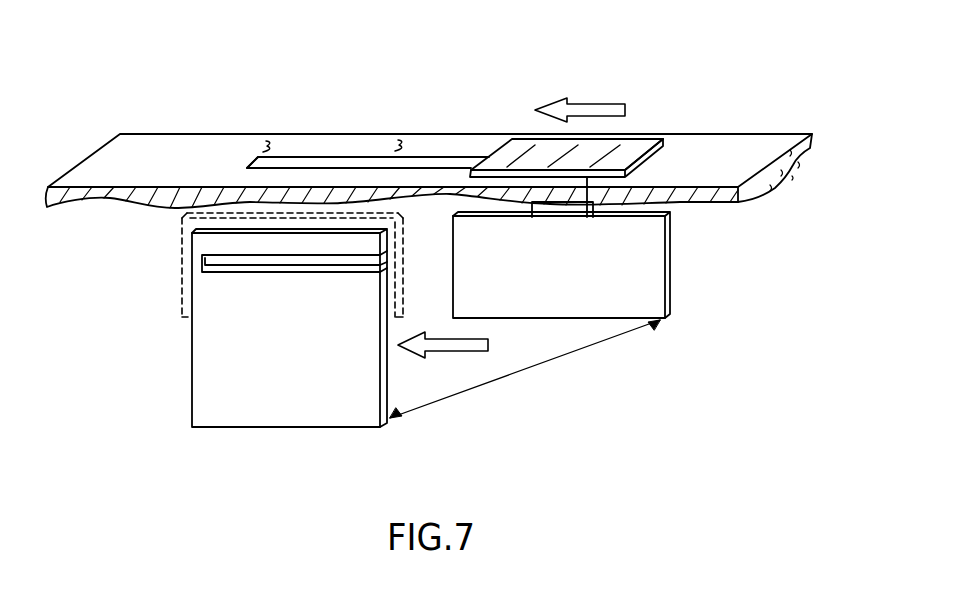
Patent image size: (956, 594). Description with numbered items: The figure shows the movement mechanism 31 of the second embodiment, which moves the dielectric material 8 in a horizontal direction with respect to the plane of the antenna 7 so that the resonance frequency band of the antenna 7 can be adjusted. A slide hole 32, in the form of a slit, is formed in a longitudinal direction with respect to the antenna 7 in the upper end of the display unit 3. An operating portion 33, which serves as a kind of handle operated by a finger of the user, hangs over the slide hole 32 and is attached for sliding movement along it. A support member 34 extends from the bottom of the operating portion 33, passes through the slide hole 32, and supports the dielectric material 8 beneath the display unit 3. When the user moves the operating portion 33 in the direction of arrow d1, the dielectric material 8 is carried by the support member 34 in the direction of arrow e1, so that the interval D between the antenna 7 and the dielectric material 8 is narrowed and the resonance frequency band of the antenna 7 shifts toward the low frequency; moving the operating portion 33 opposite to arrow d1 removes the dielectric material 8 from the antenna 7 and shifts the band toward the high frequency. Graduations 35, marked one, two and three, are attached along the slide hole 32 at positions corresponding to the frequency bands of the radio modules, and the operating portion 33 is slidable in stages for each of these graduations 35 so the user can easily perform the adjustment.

The display unit 3 is at (718, 144).
The antenna 7 is at (192, 361).
The dielectric material 8 is at (665, 276).
The movement mechanism 31 is at (481, 149).
The slide hole 32 is at (332, 165).
The operating portion 33 is at (640, 147).
The support member 34 is at (593, 212).
The graduations 35 is at (261, 152).
The direction of movement of operation portion d1 is at (592, 101).
The direction of movement of dielectric material e1 is at (448, 357).
The interval between antenna and dielectric material D is at (525, 369).